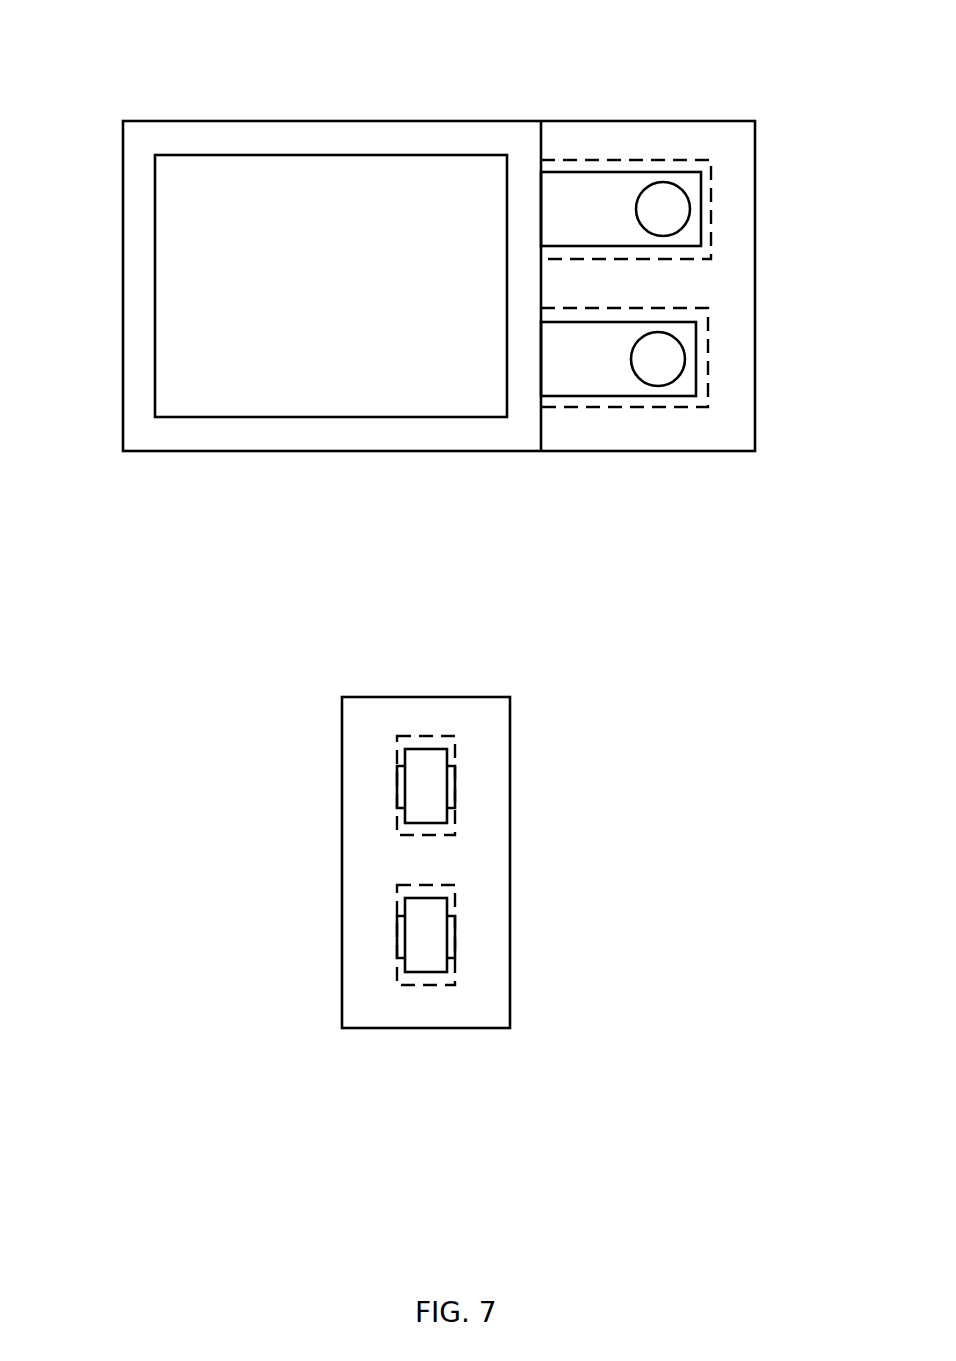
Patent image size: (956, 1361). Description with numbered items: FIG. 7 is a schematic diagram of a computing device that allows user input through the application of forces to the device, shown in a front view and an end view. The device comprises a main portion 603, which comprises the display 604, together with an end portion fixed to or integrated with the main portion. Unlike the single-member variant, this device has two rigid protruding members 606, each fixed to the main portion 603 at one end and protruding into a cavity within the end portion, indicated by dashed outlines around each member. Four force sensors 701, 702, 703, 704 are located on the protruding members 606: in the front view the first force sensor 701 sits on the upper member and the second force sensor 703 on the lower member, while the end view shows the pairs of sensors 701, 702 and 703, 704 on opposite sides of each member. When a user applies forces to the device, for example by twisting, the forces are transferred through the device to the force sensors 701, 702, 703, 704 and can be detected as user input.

The main portion 603 is at (277, 120).
The display 604 is at (173, 283).
The rigid protruding member 606 is at (588, 195).
The force sensor 701 is at (680, 199).
The force sensor 702 is at (457, 782).
The force sensor 703 is at (680, 360).
The force sensor 704 is at (457, 932).